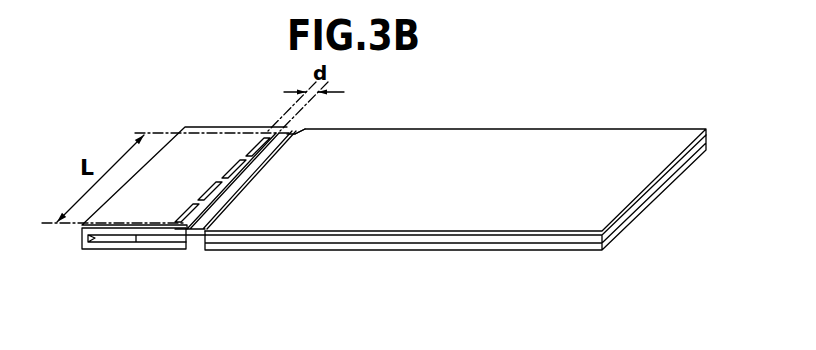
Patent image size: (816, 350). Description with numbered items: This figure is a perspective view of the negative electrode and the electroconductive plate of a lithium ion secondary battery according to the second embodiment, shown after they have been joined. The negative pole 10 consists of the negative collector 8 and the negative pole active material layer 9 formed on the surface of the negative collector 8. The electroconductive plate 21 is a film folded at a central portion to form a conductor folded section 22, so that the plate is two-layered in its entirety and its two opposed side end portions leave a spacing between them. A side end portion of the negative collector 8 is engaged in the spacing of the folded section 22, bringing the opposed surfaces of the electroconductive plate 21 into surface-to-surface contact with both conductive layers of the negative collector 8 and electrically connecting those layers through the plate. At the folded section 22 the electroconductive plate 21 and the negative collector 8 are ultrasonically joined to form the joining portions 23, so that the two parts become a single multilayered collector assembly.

The negative collector 8 is at (305, 129).
The negative pole active material layer 9 is at (588, 148).
The negative pole 10 is at (479, 152).
The electroconductive plate 21 is at (173, 159).
The conductor folded section 22 is at (170, 244).
The joining portions 23 is at (260, 148).